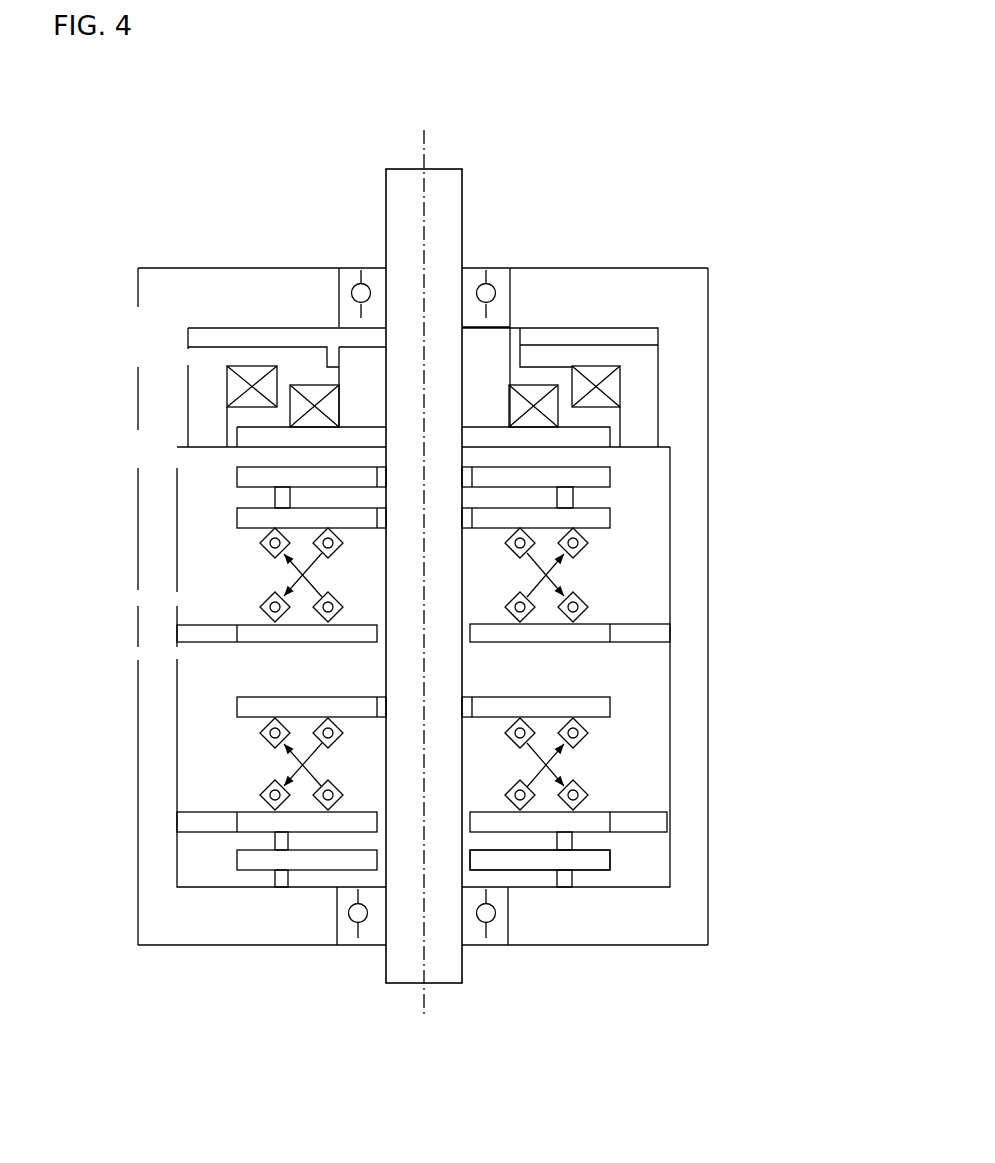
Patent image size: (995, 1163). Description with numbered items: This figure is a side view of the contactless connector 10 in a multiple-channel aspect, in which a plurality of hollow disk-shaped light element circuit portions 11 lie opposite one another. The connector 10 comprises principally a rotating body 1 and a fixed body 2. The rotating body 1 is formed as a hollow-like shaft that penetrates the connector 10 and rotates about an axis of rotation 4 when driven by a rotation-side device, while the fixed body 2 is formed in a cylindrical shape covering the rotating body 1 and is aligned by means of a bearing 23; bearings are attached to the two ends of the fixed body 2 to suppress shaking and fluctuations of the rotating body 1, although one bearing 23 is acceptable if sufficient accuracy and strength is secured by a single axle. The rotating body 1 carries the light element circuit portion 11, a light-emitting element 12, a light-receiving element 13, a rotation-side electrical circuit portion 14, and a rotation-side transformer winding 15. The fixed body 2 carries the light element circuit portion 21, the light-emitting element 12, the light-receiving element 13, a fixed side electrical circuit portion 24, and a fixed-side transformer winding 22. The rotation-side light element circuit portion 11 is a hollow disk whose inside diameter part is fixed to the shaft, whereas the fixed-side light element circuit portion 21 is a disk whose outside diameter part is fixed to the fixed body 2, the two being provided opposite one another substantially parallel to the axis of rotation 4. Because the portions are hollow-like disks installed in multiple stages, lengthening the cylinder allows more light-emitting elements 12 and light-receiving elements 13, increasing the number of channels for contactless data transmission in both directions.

The rotating body 1 is at (403, 235).
The fixed body 2 is at (690, 818).
The axis of rotation 4 is at (425, 158).
The contactless connector 10 is at (316, 1113).
The light element circuit portion 11 is at (247, 503).
The light-emitting element 12 is at (327, 530).
The light-receiving element 13 is at (273, 531).
The rotation-side electrical circuit portion 14 is at (270, 475).
The rotation-side transformer winding 15 is at (315, 385).
The light element circuit portion 21 is at (597, 630).
The fixed-side transformer winding 22 is at (613, 381).
The bearing 23 is at (482, 268).
The fixed side electrical circuit portion 24 is at (517, 858).